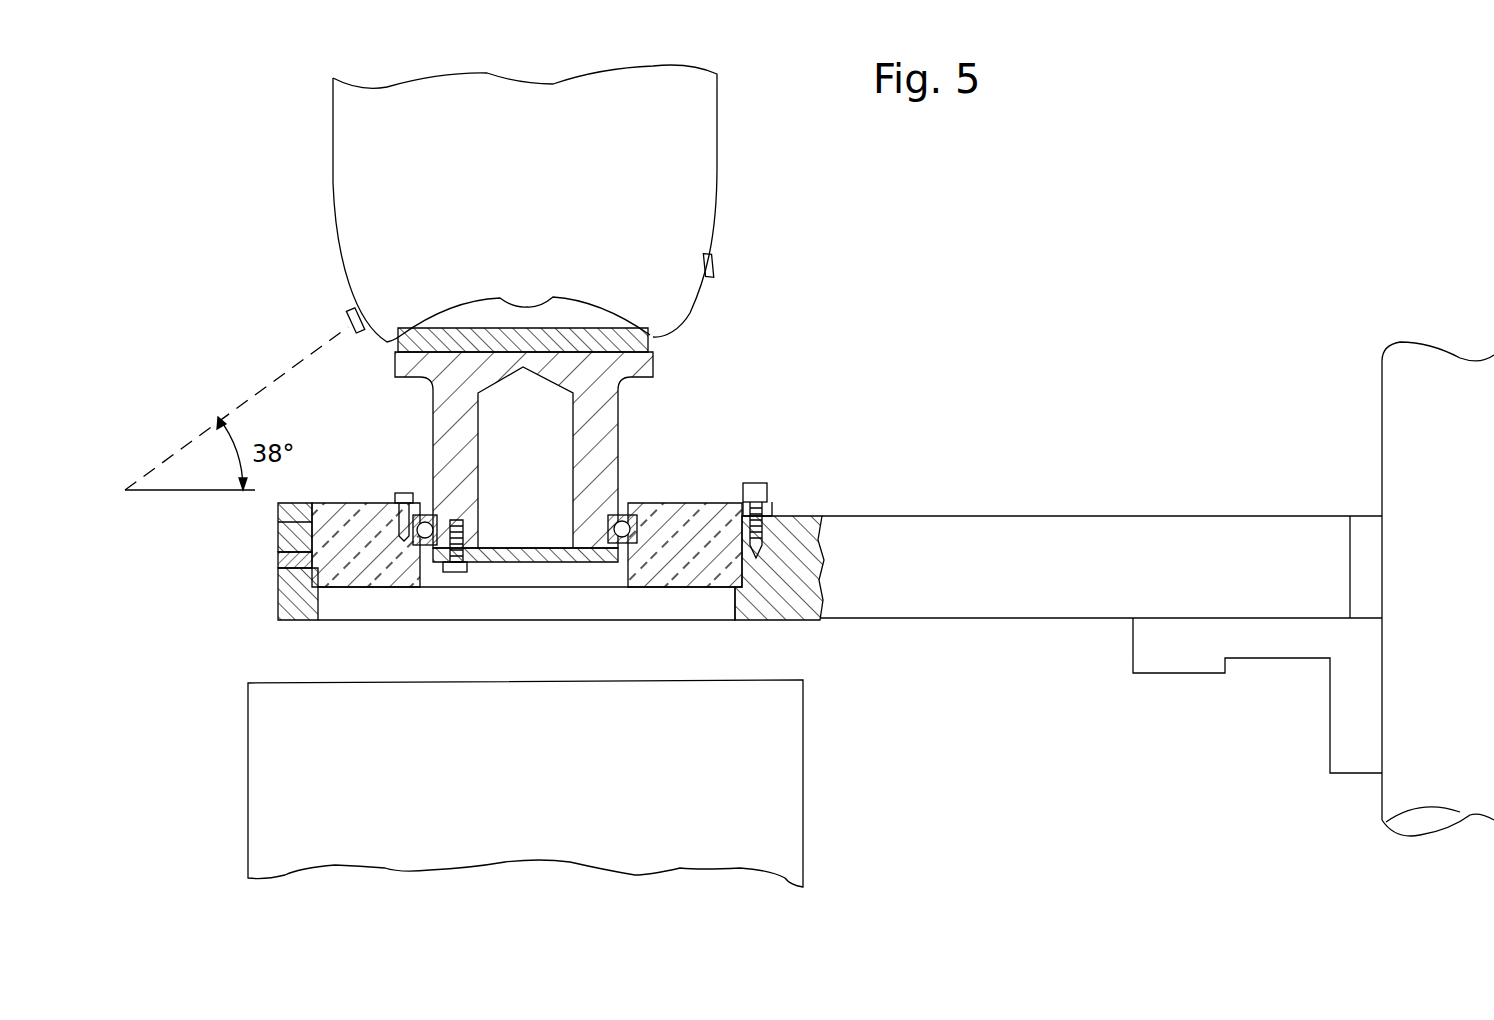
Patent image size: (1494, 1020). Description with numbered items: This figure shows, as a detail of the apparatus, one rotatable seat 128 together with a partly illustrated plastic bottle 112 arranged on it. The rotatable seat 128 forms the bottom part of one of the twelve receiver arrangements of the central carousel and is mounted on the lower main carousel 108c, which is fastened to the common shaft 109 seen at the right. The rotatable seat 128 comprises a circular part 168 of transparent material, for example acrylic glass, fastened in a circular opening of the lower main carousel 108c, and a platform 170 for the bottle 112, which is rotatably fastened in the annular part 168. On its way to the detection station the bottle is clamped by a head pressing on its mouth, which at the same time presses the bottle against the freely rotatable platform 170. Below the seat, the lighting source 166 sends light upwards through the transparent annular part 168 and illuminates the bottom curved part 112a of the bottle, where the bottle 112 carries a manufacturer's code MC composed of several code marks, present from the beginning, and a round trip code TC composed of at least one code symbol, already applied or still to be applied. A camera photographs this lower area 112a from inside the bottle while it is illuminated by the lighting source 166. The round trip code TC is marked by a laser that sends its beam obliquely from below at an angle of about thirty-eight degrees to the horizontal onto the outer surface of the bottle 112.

The bottle 112 is at (668, 135).
The bottom curved part of the bottle 112a is at (695, 311).
The manufacturer's code MC is at (713, 267).
The round trip code TC is at (347, 314).
The platform 170 is at (612, 428).
The circular part of transparent material 168 is at (672, 518).
The rotatable seat 128 is at (597, 595).
The lower main carousel 108c is at (955, 548).
The shaft 109 is at (1405, 408).
The lighting source 166 is at (767, 760).